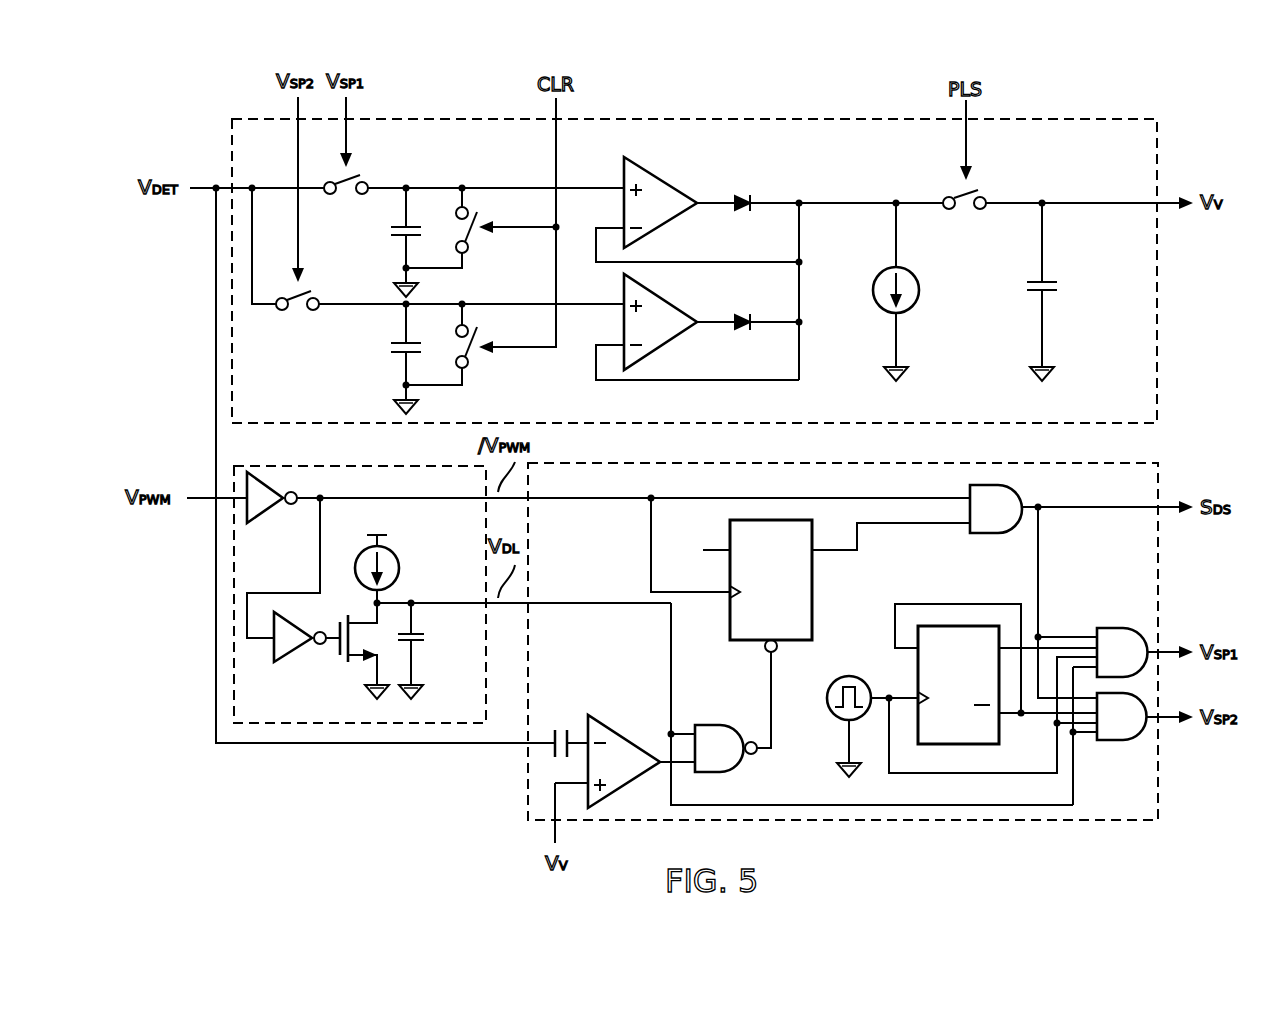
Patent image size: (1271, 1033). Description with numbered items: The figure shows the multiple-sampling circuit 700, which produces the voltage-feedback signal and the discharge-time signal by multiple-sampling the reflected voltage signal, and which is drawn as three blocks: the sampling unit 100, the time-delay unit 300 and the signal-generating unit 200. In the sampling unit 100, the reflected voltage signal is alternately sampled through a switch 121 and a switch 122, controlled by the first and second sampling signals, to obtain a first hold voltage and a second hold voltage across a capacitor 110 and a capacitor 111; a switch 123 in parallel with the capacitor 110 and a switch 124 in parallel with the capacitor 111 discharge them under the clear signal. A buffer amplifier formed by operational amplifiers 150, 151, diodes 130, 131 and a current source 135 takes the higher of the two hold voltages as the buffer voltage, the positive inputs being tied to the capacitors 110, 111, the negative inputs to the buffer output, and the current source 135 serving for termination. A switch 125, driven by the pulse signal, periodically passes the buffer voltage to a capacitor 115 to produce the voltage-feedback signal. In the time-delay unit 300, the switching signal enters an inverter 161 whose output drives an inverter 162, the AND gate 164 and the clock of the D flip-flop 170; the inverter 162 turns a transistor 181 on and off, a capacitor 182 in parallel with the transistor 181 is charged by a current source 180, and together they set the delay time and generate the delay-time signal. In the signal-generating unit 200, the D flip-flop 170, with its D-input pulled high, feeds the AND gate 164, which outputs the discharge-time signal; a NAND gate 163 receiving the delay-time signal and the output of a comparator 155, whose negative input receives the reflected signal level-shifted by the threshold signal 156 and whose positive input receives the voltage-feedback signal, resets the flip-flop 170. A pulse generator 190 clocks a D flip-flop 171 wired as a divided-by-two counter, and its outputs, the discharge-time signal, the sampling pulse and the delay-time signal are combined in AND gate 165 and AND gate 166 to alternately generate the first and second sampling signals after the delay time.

The sampling unit 100 is at (1159, 378).
The multiple-sampling circuit 700 is at (1130, 77).
The capacitor 110 is at (390, 229).
The capacitor 111 is at (390, 346).
The capacitor 115 is at (1060, 287).
The switch 121 is at (372, 181).
The switch 122 is at (298, 317).
The switch 123 is at (470, 250).
The switch 124 is at (470, 366).
The switch 125 is at (964, 212).
The diode 130 is at (742, 192).
The diode 131 is at (742, 334).
The current source 135 is at (919, 295).
The operational amplifier 150 is at (660, 170).
The operational amplifier 151 is at (664, 350).
The comparator 155 is at (615, 718).
The threshold signal 156 is at (560, 726).
The inverter 161 is at (262, 520).
The inverter 162 is at (284, 662).
The NAND gate 163 is at (710, 725).
The AND gate 164 is at (988, 535).
The AND gate 165 is at (1115, 628).
The AND gate 166 is at (1115, 740).
The D flip-flop 170 is at (812, 578).
The D flip-flop 171 is at (960, 626).
The current source 180 is at (399, 570).
The transistor 181 is at (340, 665).
The capacitor 182 is at (426, 640).
The pulse generator 190 is at (855, 676).
The signal-generating unit 200 is at (1160, 800).
The time-delay unit 300 is at (395, 723).